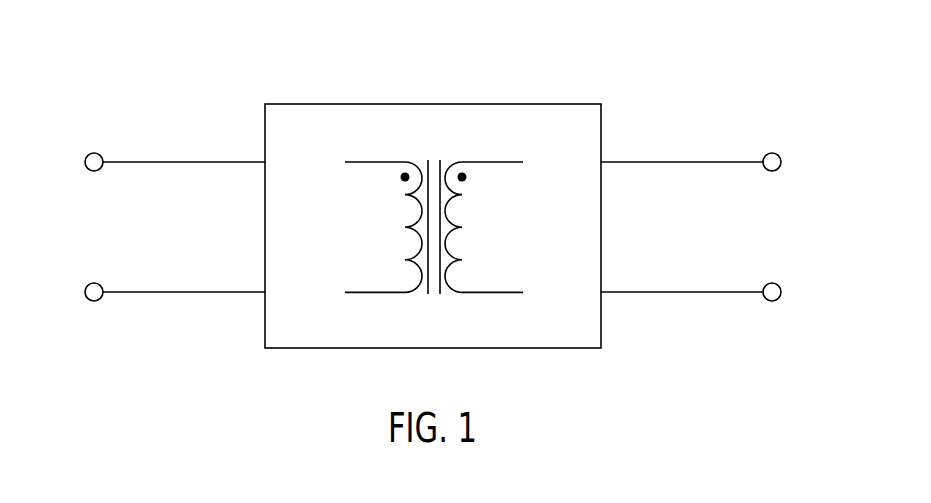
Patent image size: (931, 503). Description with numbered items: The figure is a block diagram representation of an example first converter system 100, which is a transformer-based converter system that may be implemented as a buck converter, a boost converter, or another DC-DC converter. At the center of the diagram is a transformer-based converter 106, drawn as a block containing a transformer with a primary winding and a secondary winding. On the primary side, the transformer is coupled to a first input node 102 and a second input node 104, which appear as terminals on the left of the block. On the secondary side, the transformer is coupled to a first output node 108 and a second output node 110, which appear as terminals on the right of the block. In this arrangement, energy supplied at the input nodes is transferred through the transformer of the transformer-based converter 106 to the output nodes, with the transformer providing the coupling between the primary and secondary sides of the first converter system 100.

The first converter system 100 is at (143, 47).
The first input node 102 is at (98, 153).
The second input node 104 is at (98, 283).
The transformer-based converter 106 is at (433, 104).
The first output node 108 is at (766, 153).
The second output node 110 is at (766, 284).